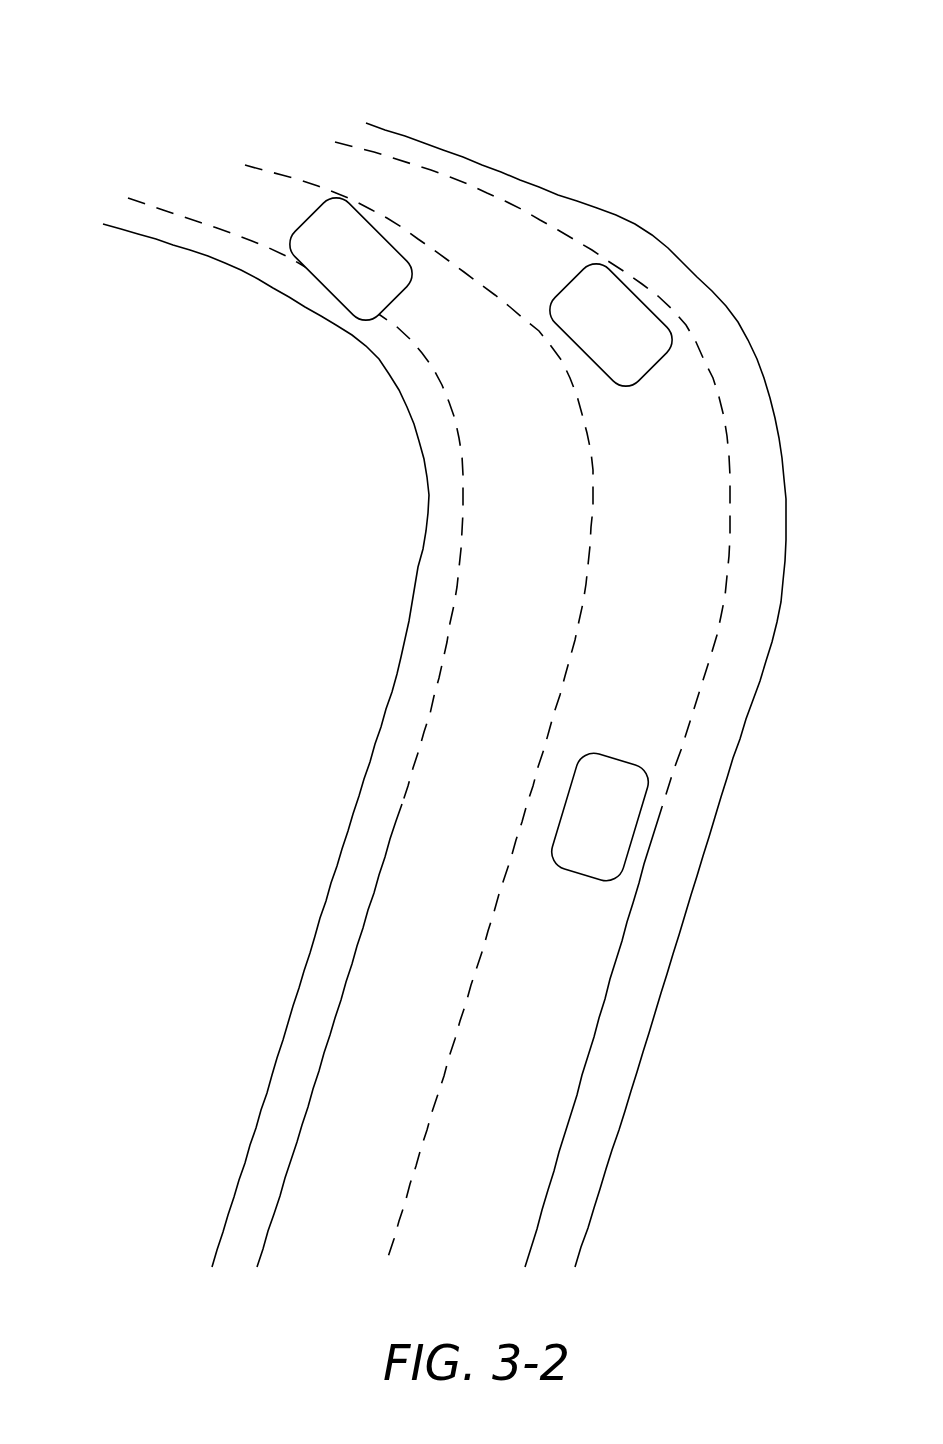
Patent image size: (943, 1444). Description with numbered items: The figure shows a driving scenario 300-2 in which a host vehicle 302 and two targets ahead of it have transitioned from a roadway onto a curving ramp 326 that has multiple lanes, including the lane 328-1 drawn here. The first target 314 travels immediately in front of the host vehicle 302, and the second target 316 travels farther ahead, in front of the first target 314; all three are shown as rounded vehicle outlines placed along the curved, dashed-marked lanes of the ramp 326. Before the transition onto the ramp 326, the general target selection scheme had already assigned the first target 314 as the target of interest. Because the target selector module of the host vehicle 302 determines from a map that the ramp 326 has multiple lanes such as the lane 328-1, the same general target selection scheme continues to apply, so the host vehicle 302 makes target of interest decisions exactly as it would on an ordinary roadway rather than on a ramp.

The driving scenario 300-2 is at (138, 48).
The host vehicle 302 is at (583, 877).
The target T1 314 is at (640, 297).
The target T2 316 is at (325, 289).
The ramp 326 is at (264, 608).
The lane 328-1 is at (344, 1063).